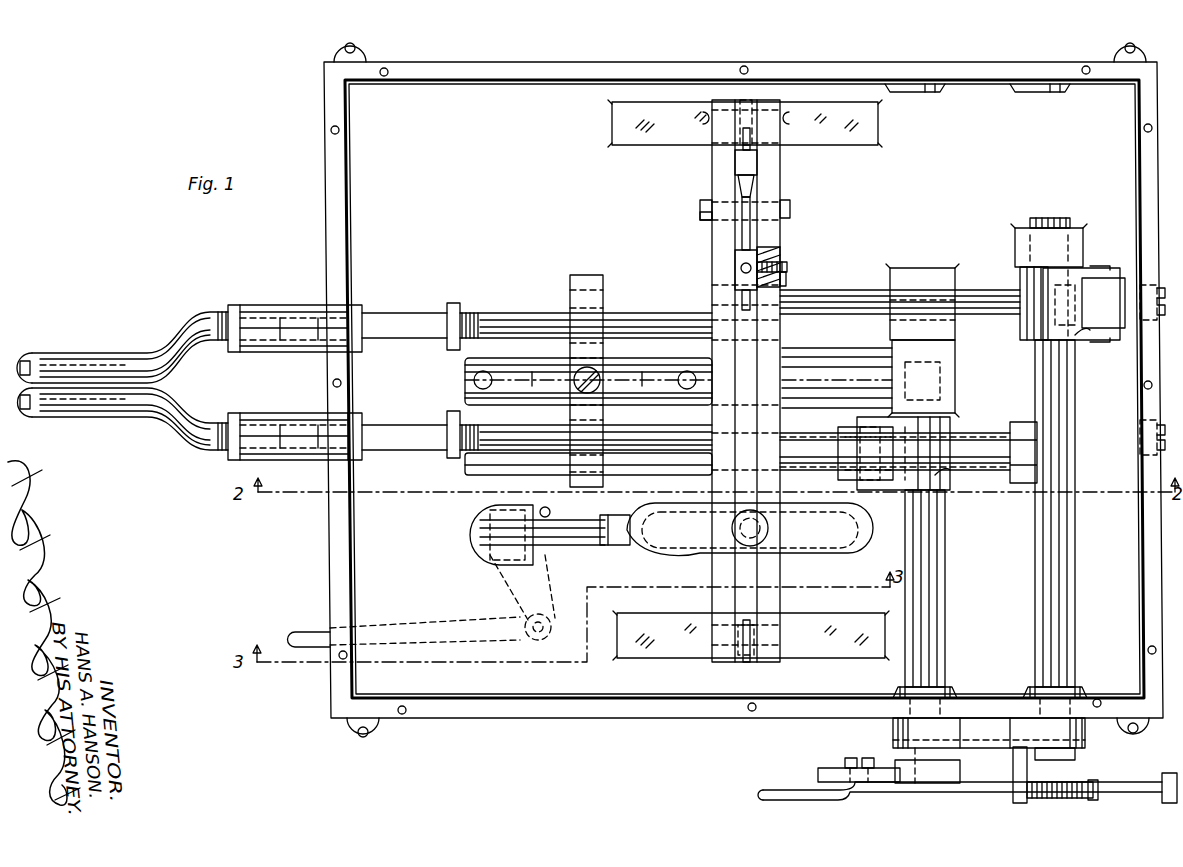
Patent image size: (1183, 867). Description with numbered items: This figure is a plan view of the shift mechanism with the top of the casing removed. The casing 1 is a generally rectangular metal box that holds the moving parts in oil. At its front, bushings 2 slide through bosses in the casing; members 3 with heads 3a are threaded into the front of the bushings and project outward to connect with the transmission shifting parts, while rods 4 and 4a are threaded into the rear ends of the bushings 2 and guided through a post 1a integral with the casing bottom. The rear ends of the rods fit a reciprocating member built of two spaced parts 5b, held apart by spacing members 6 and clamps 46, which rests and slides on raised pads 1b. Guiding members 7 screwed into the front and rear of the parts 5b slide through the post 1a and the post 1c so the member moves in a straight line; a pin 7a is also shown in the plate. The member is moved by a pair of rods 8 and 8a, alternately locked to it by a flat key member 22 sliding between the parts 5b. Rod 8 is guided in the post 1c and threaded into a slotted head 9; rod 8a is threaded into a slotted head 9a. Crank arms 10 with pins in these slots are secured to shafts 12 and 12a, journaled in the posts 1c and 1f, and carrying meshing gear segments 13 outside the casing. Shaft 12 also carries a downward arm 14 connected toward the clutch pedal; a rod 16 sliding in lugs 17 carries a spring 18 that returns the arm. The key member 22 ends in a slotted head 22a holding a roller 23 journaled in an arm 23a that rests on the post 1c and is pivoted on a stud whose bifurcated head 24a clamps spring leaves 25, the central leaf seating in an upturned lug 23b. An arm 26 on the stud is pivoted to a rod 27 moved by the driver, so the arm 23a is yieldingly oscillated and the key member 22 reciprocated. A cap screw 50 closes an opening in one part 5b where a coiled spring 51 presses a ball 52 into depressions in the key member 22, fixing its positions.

The casing 1 is at (468, 73).
The upstanding lug or post 1a is at (598, 277).
The raised steps or pads 1b is at (637, 137).
The post 1c is at (930, 278).
The post 1f is at (1022, 242).
The bushings 2 is at (388, 305).
The members 3 is at (100, 357).
The heads 3a is at (25, 408).
The rod 4 is at (505, 318).
The rod 4a is at (480, 467).
The parts of the reciprocating member 5b is at (722, 178).
The spacing members 6 is at (745, 100).
The guiding members 7 is at (642, 376).
The pin 7a is at (476, 384).
The rod 8 is at (835, 302).
The rod 8a is at (806, 465).
The head 9 is at (1100, 282).
The head 9a is at (850, 482).
The crank arm members 10 is at (1075, 336).
The rod or shaft 12 is at (930, 597).
The shaft 12a is at (1060, 595).
The gear segments 13 is at (893, 733).
The arm 14 is at (832, 772).
The rod 16 is at (975, 790).
The lugs 17 is at (1022, 768).
The spring 18 is at (1068, 788).
The key member 22 is at (782, 255).
The slotted head 22a is at (810, 550).
The roller 23 is at (770, 528).
The arm 23a is at (575, 553).
The lug 23b is at (612, 547).
The bifurcated head 24a is at (490, 555).
The spring leaves 25 is at (548, 540).
The arm 26 is at (520, 604).
The rod 27 is at (310, 632).
The clamps 46 is at (703, 218).
The cap screw 50 is at (790, 266).
The coiled spring 51 is at (786, 280).
The ball 52 is at (746, 268).